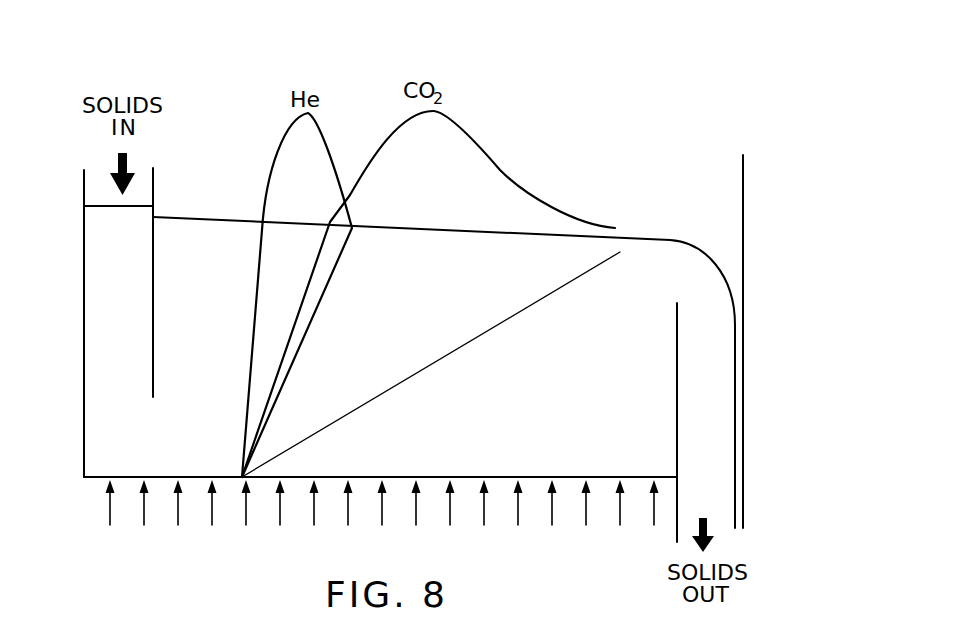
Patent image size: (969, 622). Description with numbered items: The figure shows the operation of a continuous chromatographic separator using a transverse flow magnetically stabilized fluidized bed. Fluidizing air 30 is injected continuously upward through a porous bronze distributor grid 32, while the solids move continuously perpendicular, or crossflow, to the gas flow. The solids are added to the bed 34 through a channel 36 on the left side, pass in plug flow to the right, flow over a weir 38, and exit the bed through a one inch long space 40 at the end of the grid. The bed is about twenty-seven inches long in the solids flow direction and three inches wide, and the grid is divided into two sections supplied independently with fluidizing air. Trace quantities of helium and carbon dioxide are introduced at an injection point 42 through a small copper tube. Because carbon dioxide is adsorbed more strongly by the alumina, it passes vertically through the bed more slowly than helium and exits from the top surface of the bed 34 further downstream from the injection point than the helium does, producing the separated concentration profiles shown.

The fluidizing air 30 is at (413, 512).
The porous bronze distributor grid 32 is at (390, 477).
The bed 34 is at (525, 400).
The channel 36 is at (110, 300).
The weir 38 is at (677, 333).
The space 40 is at (695, 428).
The injection point 42 is at (241, 476).